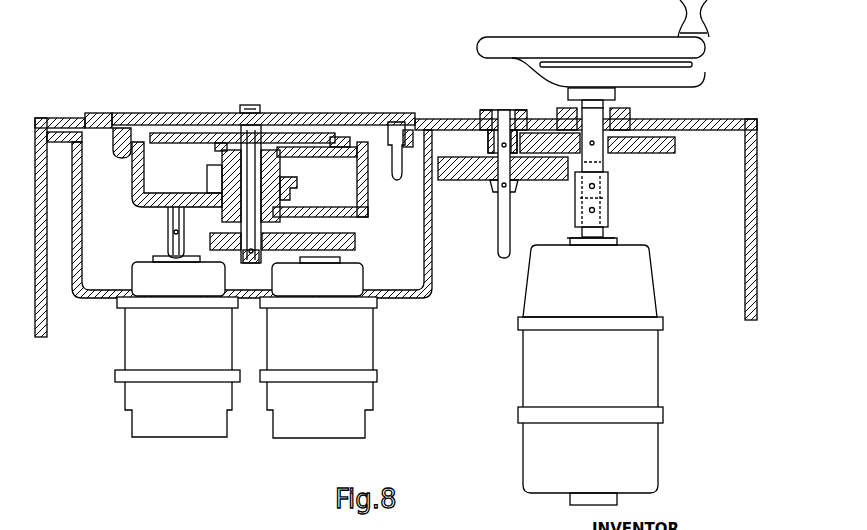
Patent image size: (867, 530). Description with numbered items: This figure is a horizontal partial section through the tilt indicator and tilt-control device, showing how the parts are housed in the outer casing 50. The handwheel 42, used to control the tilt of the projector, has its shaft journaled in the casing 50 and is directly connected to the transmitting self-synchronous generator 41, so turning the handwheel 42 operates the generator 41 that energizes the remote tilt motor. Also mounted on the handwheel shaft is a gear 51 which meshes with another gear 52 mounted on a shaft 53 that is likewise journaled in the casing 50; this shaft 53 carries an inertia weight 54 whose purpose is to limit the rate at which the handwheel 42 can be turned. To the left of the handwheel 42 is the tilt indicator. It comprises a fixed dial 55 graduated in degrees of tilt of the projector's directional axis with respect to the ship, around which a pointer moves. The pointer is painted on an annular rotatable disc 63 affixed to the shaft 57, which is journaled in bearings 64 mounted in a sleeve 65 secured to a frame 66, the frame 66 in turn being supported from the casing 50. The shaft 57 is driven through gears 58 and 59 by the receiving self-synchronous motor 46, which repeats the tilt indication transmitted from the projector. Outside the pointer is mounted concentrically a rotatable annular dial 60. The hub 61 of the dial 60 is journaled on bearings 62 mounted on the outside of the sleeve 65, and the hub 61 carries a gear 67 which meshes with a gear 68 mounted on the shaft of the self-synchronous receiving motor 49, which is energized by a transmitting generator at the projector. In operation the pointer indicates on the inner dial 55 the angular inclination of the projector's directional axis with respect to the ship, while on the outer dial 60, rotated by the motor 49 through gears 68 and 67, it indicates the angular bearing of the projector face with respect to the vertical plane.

The self-synchronous generator 41 is at (628, 278).
The handwheel 42 is at (695, 50).
The receiving self-synchronous motor 46 is at (348, 352).
The self-synchronous receiving motor 49 is at (150, 342).
The outer casing 50 is at (718, 122).
The gear 51 is at (662, 153).
The gear 52 is at (473, 123).
The shaft 53 is at (503, 223).
The inertia weight 54 is at (528, 170).
The fixed dial 55 is at (205, 132).
The shaft 57 is at (250, 254).
The gear 58 is at (228, 240).
The gear 59 is at (352, 240).
The rotatable annular dial 60 is at (147, 140).
The hub 61 is at (223, 168).
The bearings 62 is at (222, 155).
The annular rotatable disc 63 is at (343, 132).
The bearings 64 is at (262, 150).
The sleeve 65 is at (283, 178).
The frame 66 is at (367, 208).
The gear 67 is at (168, 215).
The gear 68 is at (133, 207).